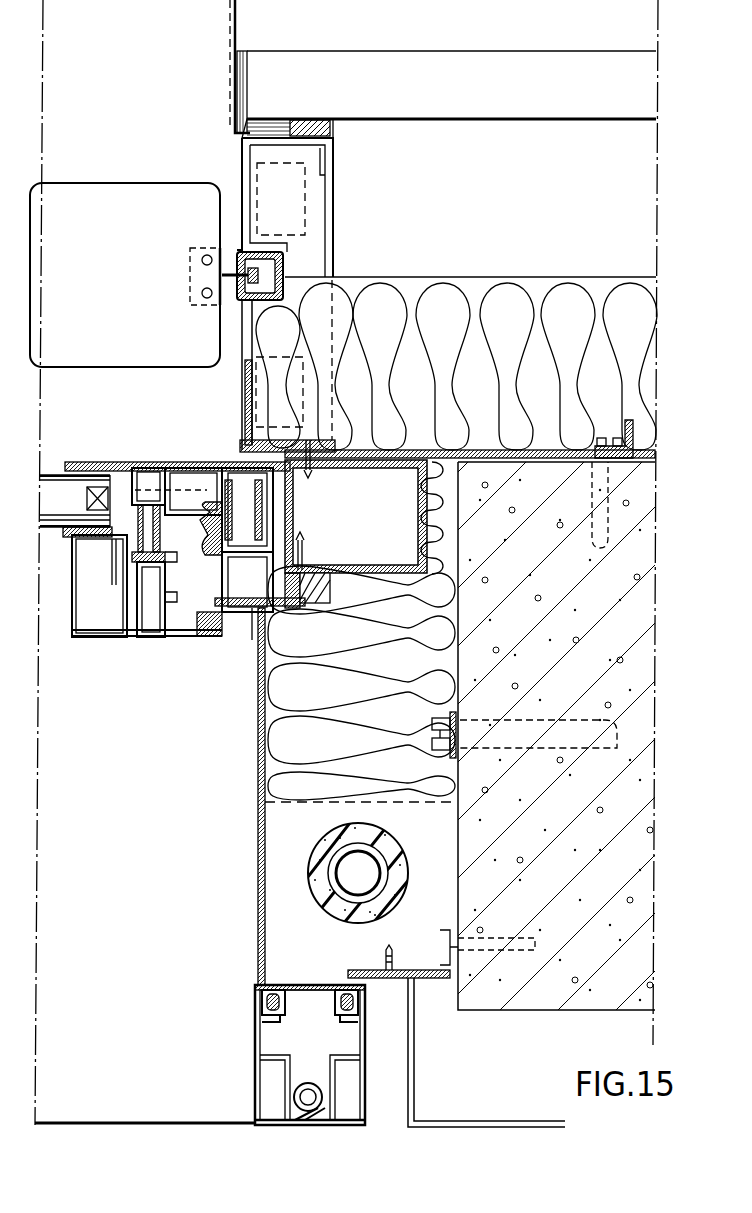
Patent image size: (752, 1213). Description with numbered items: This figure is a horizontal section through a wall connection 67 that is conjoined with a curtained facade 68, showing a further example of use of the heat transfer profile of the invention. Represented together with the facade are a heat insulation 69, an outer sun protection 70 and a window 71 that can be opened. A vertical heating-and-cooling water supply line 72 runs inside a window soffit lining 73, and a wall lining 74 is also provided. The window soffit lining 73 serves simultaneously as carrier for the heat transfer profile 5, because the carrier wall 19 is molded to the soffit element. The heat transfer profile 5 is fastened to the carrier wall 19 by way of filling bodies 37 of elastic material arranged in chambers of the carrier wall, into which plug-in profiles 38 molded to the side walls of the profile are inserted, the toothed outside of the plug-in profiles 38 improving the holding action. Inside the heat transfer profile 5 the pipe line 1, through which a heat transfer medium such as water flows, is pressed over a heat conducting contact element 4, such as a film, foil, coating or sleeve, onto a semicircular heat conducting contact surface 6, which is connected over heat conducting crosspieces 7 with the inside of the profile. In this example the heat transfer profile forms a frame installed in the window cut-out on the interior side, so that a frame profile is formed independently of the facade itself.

The pipe line 1 is at (318, 1108).
The heat conducting contact element 4 is at (288, 1078).
The heat transfer profile 5 is at (291, 1033).
The heat conducting contact surface 6 is at (292, 1100).
The heat conducting crosspieces 7 is at (345, 1062).
The carrier wall 19 is at (320, 985).
The filling bodies 37 is at (256, 1000).
The plug-in profiles 38 is at (282, 1012).
The wall connection 67 is at (597, 440).
The curtained facade 68 is at (553, 105).
The heat insulation 69 is at (455, 300).
The outer sun protection 70 is at (100, 205).
The window 71 is at (88, 636).
The heating-and-cooling water supply line 72 is at (402, 858).
The window soffit lining 73 is at (258, 850).
The wall lining 74 is at (512, 1120).